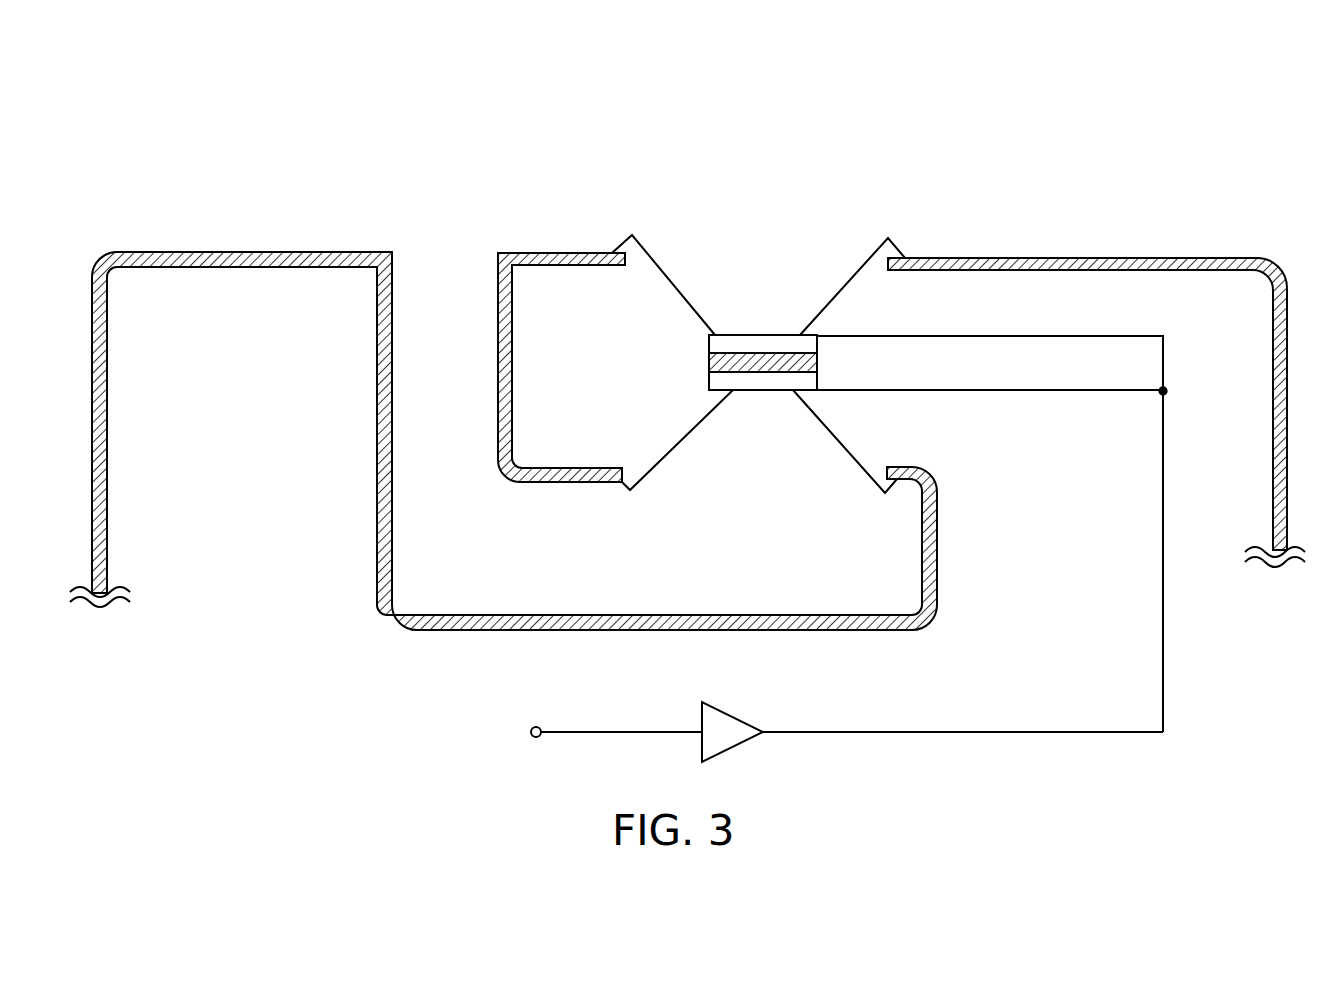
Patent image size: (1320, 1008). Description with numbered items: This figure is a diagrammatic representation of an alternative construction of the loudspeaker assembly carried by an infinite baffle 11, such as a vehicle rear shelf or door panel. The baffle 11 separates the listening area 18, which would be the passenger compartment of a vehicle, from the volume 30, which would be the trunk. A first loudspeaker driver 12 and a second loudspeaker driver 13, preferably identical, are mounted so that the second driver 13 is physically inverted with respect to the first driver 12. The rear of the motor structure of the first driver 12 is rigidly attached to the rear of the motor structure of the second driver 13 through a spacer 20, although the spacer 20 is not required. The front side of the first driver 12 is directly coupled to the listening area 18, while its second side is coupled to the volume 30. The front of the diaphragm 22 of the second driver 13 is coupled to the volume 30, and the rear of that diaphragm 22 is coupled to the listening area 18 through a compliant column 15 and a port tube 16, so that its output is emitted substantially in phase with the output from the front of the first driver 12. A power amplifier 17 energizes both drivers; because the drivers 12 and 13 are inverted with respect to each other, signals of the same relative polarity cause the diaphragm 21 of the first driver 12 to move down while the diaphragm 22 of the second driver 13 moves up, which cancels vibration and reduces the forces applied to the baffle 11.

The infinite baffle 11 is at (258, 252).
The first loudspeaker driver 12 is at (751, 281).
The second loudspeaker driver 13 is at (753, 431).
The compliant column 15 is at (806, 577).
The port tube 16 is at (452, 402).
The power amplifier 17 is at (729, 715).
The listening area 18 is at (744, 148).
The spacer 20 is at (818, 365).
The diaphragm of first driver 21 is at (843, 283).
The diaphragm of second driver 22 is at (860, 467).
The volume 30 is at (227, 631).